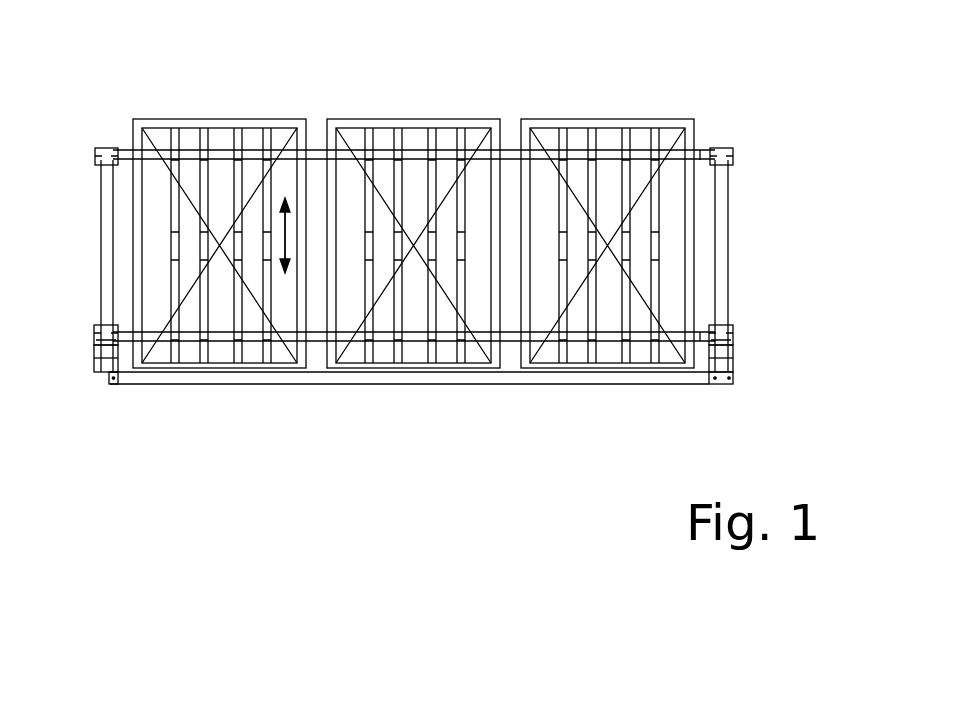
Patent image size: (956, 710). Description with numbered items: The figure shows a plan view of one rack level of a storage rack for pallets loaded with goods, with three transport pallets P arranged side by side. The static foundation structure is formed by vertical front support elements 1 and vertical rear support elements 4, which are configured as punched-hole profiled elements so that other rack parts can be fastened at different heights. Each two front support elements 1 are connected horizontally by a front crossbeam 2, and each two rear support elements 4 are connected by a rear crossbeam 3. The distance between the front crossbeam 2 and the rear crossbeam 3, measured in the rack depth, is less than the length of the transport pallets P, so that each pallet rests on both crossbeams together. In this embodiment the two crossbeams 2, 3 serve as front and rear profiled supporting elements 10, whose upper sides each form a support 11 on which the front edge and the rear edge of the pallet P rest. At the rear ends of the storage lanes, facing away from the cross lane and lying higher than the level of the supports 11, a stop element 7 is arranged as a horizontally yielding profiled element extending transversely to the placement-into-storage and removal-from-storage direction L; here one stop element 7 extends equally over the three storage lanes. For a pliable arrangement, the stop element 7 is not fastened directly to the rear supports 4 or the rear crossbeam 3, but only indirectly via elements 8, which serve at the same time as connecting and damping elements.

The vertical front support element 1 is at (99, 150).
The front crossbeam 2 is at (318, 150).
The rear crossbeam 3 is at (513, 341).
The profiled supporting element 10 is at (414, 266).
The vertical rear support element 4 is at (733, 335).
The stop element 7 is at (287, 384).
The connecting and damping element 8 is at (104, 365).
The support 11 is at (702, 150).
The transport pallet P is at (203, 118).
The placement-into-storage and removal-from-storage direction L is at (288, 235).